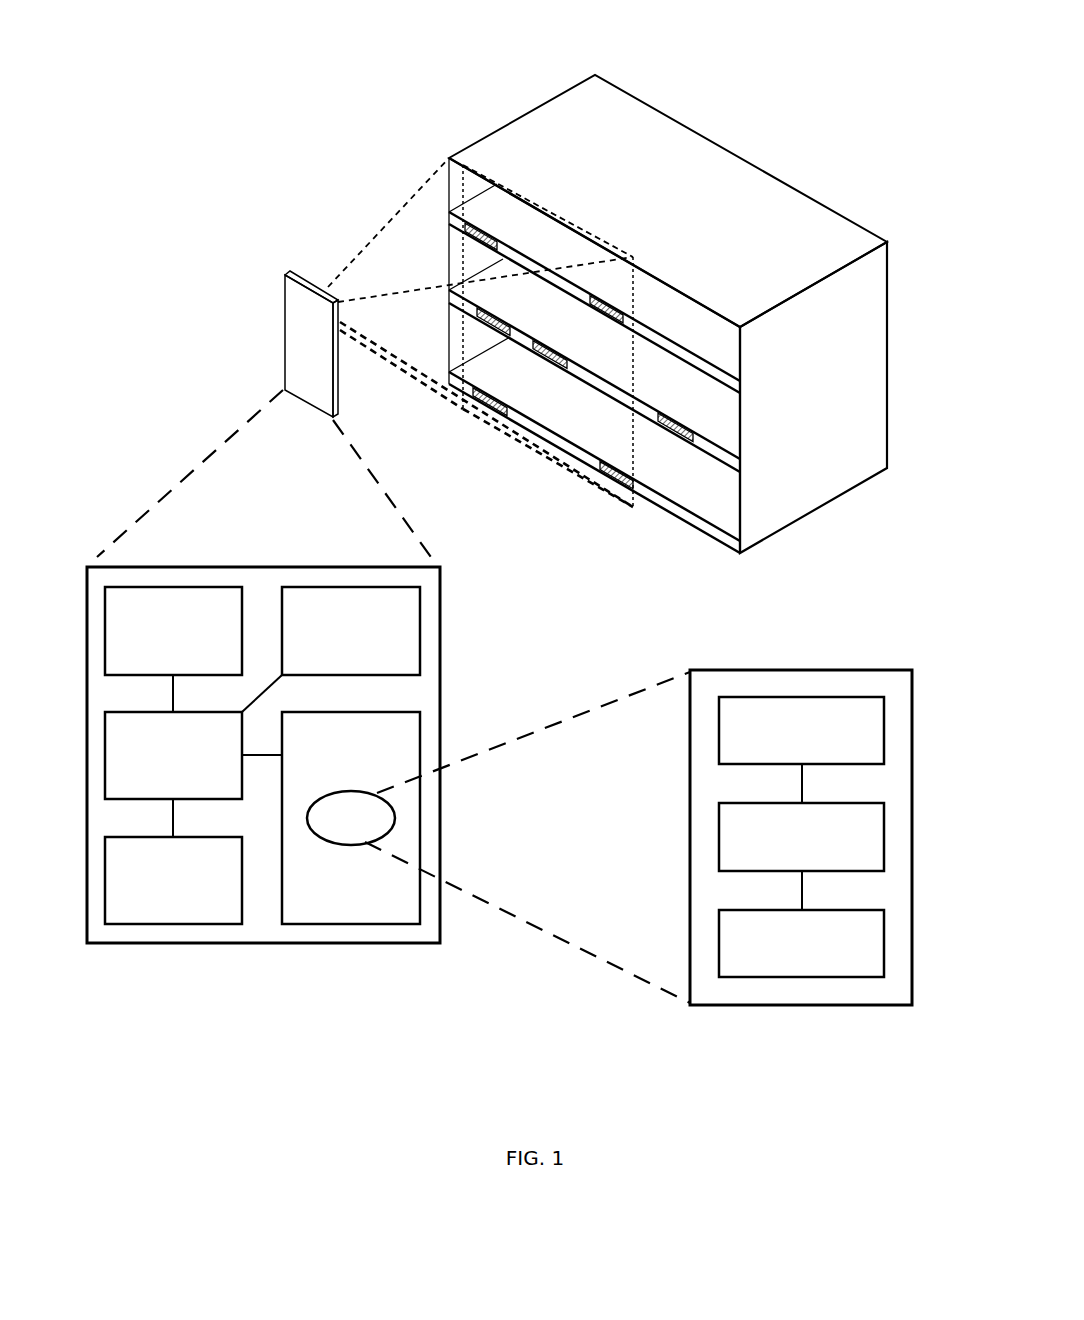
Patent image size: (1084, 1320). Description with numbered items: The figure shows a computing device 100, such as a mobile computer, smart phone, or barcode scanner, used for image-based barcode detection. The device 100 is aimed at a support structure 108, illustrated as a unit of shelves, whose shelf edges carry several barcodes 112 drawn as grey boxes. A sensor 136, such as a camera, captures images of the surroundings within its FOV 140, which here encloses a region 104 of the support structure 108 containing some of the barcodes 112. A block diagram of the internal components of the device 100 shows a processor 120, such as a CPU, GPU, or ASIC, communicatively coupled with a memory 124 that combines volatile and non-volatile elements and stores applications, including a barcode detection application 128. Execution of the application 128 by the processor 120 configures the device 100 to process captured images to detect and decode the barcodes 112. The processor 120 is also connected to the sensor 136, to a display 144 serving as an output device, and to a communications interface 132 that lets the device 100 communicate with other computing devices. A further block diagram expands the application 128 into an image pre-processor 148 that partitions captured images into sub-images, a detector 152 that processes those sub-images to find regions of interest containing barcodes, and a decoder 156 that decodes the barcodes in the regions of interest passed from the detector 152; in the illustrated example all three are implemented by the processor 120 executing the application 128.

The computing device 100 is at (286, 268).
The region 104 is at (512, 188).
The support structure 108 is at (780, 191).
The barcodes 112 is at (558, 366).
The processor 120 is at (193, 774).
The memory 124 is at (351, 818).
The barcode detection application 128 is at (609, 837).
The communications interface 132 is at (173, 880).
The sensor 136 is at (331, 649).
The FOV 140 is at (413, 203).
The display 144 is at (307, 347).
The image pre-processor 148 is at (801, 750).
The detector 152 is at (801, 856).
The decoder 156 is at (801, 943).